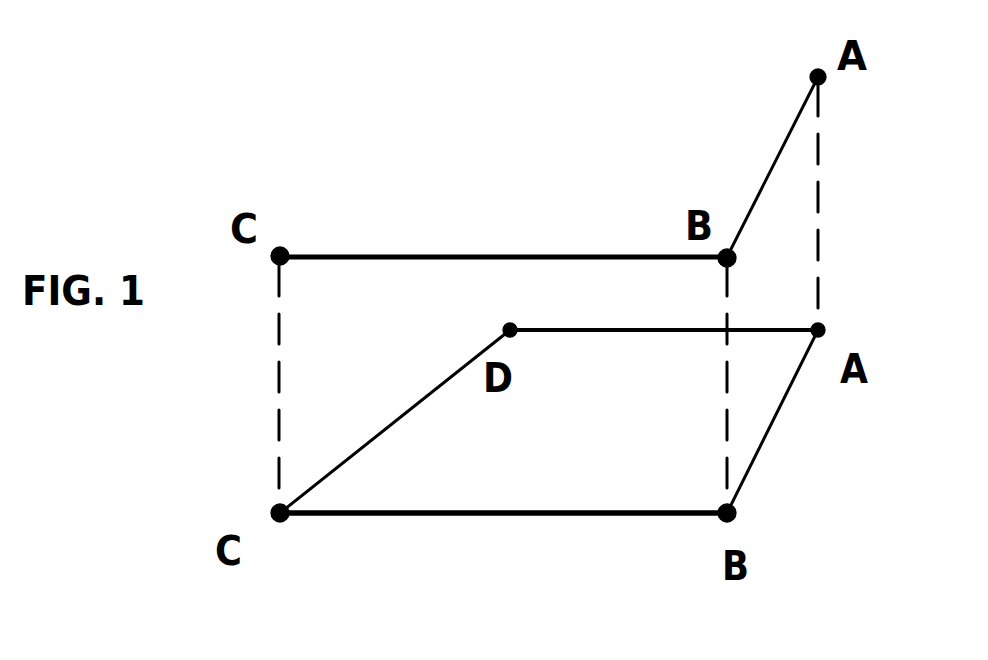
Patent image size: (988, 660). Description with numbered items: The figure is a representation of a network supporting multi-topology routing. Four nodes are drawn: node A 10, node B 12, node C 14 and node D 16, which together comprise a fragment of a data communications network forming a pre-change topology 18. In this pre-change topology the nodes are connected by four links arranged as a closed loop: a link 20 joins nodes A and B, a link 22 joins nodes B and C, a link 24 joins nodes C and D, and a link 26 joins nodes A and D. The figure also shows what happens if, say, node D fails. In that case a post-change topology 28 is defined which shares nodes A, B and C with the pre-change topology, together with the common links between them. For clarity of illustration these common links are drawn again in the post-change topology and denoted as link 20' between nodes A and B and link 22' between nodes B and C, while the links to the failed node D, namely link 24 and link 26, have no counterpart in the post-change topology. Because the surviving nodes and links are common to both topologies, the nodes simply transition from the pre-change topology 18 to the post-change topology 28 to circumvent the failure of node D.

The node A 10 is at (905, 297).
The node B 12 is at (815, 487).
The node C 14 is at (276, 505).
The node D 16 is at (518, 333).
The pre-change topology 18 is at (588, 442).
The link 20 is at (809, 421).
The link 20' is at (763, 163).
The link 22 is at (503, 567).
The link 22' is at (503, 231).
The link 24 is at (425, 398).
The link 26 is at (662, 328).
The post-change topology 28 is at (598, 228).